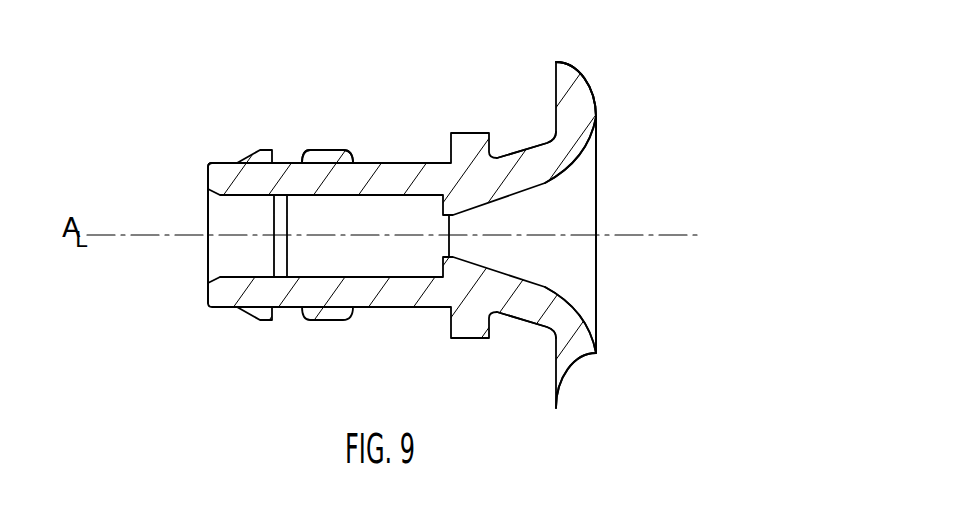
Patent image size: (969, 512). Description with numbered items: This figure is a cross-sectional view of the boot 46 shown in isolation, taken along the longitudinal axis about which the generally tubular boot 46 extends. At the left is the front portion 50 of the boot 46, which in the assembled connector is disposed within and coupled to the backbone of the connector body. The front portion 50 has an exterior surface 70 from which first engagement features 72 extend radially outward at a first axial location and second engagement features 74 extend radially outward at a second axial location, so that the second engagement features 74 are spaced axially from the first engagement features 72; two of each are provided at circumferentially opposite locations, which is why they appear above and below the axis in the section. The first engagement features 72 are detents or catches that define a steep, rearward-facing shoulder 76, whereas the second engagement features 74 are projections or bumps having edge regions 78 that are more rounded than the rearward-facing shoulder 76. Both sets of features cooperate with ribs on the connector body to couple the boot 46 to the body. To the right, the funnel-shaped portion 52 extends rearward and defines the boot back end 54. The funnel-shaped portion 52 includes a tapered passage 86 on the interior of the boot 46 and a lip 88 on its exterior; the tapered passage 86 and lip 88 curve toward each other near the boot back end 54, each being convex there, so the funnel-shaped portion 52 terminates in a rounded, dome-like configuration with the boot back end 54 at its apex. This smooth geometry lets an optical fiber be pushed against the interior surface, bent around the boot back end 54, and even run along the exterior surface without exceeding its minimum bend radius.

The boot 46 is at (688, 66).
The front portion 50 is at (373, 300).
The funnel-shaped portion 52 is at (522, 316).
The boot back end 54 is at (598, 118).
The exterior surface 70 is at (220, 163).
The first engagement features 72 is at (258, 150).
The second engagement features 74 is at (343, 149).
The rearward-facing shoulder 76 is at (284, 162).
The edge regions 78 is at (307, 150).
The tapered passage 86 is at (545, 185).
The lip 88 is at (588, 72).